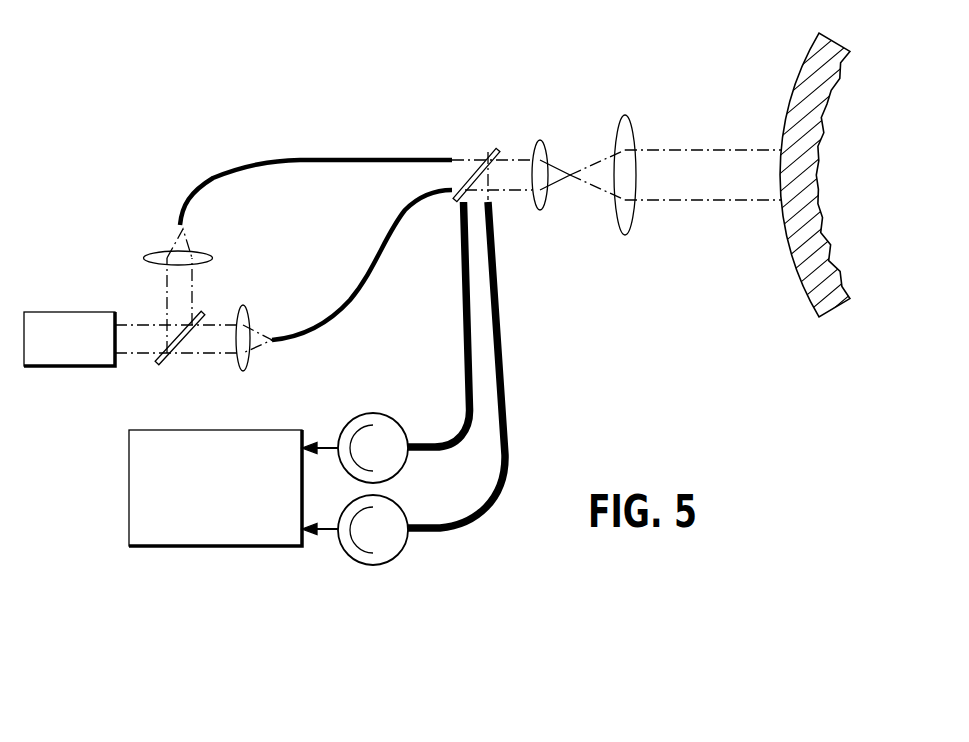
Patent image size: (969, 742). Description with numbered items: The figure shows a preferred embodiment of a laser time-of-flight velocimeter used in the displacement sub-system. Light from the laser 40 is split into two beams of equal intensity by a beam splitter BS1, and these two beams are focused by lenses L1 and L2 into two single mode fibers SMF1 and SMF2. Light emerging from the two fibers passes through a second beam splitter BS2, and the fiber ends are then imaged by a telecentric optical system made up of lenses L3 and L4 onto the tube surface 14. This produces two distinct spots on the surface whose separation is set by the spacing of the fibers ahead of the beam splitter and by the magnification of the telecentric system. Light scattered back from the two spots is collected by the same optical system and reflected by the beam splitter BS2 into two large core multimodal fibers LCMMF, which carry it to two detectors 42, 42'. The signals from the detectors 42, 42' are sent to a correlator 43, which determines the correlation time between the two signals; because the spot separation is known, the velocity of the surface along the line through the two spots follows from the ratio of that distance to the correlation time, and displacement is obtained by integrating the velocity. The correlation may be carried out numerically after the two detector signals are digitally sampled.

The laser 40 is at (48, 312).
The lens L1 is at (152, 253).
The beam splitter BS1 is at (165, 365).
The lens L2 is at (252, 367).
The single mode fiber SMF1 is at (310, 158).
The single mode fiber SMF2 is at (360, 288).
The beam splitter BS2 is at (487, 148).
The lens L3 is at (540, 140).
The lens L4 is at (625, 115).
The tube surface 14 is at (800, 278).
The correlator 43 is at (188, 533).
The detector 42' is at (370, 417).
The detector 42 is at (377, 552).
The large core multimodal fiber LCMMF is at (470, 347).